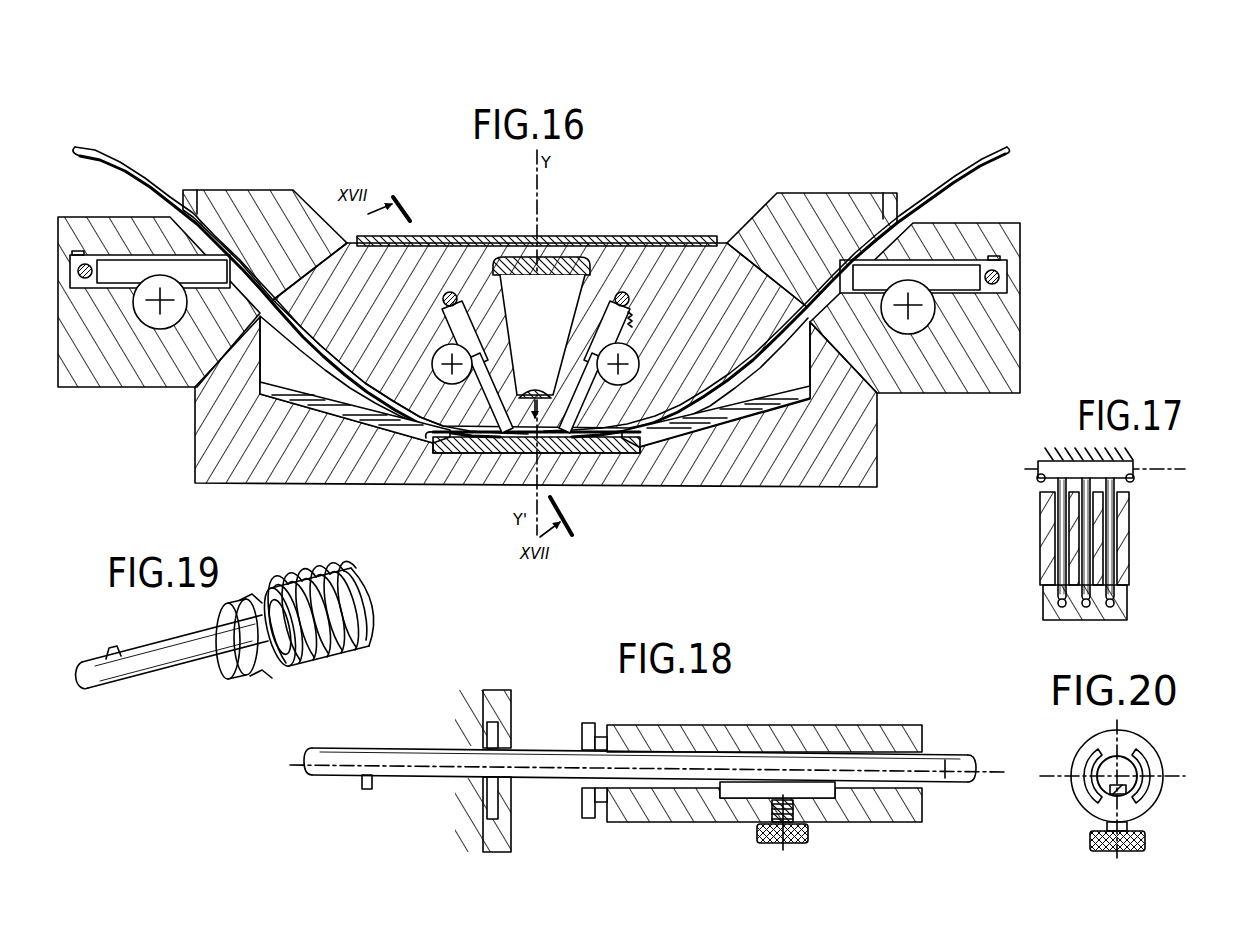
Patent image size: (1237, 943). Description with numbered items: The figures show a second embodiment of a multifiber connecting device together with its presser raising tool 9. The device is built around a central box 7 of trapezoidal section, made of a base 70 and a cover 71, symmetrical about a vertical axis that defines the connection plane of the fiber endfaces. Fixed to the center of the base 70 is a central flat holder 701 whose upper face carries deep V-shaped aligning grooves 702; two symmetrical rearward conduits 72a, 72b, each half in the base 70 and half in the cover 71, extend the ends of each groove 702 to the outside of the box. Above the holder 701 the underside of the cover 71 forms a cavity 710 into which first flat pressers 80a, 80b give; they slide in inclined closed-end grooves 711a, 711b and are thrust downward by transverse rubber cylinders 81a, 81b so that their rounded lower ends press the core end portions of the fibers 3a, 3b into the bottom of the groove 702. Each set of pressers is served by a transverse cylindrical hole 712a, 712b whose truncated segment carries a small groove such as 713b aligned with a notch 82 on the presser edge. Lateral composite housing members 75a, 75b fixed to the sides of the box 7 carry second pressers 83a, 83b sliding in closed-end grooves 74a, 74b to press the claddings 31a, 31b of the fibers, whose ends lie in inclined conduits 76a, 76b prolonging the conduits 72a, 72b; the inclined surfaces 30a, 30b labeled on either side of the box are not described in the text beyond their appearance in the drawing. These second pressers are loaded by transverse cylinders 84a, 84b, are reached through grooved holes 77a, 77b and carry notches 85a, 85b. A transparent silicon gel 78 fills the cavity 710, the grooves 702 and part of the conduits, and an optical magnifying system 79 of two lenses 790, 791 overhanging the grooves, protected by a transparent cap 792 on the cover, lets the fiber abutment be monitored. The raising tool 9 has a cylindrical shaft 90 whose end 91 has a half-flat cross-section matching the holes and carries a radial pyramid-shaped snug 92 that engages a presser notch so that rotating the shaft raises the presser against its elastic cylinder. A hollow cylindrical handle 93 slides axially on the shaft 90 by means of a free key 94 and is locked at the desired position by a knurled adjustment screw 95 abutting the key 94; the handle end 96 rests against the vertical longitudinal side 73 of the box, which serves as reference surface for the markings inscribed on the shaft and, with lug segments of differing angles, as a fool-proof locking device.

In FIG. 16, the optical fiber 3a is at (112, 160).
In FIG. 16, the optical fiber 3b is at (950, 172).
In FIG. 16, the central box 7 is at (262, 506).
In FIG. 18, the presser raising tool 9 is at (724, 718).
In FIG. 16, the inclined support surface 30a is at (314, 362).
In FIG. 16, the inclined support surface 30b is at (754, 364).
In FIG. 16, the cladding 31a is at (246, 232).
In FIG. 16, the cladding 31b is at (830, 232).
In FIG. 16, the base 70 is at (338, 446).
In FIG. 16, the cover 71 is at (388, 306).
In FIG. 16, the rearward conduit 72a is at (396, 428).
In FIG. 16, the rearward conduit 72b is at (742, 410).
In FIG. 18, the vertical longitudinal side 73 is at (510, 827).
In FIG. 16, the longitudinal closed-end groove 74a is at (78, 251).
In FIG. 16, the longitudinal closed-end groove 74b is at (997, 256).
In FIG. 16, the lateral composite housing member 75a is at (104, 390).
In FIG. 16, the lateral composite housing member 75b is at (955, 394).
In FIG. 16, the inclined rearward conduit 76a is at (192, 210).
In FIG. 16, the inclined rearward conduit 76b is at (878, 216).
In FIG. 16, the grooved and truncated cylindrical hole 77a is at (172, 328).
In FIG. 16, the grooved and truncated cylindrical hole 77b is at (926, 333).
In FIG. 16, the silicon gel 78 is at (284, 398).
In FIG. 16, the optical magnifying system 79 is at (554, 298).
In FIG. 16, the first flat presser 80a is at (480, 334).
In FIG. 17, the first flat presser 80a is at (1114, 505).
In FIG. 16, the first flat presser 80b is at (594, 349).
In FIG. 16, the transverse rubber cylinder 81a is at (452, 292).
In FIG. 17, the transverse rubber cylinder 81a is at (1038, 465).
In FIG. 16, the transverse rubber cylinder 81b is at (626, 292).
In FIG. 16, the notch 82 is at (449, 371).
In FIG. 16, the second presser 83a is at (154, 275).
In FIG. 16, the second presser 83b is at (916, 279).
In FIG. 16, the transverse cylinder 84a is at (87, 280).
In FIG. 16, the transverse cylinder 84b is at (993, 287).
In FIG. 16, the notch 85a is at (180, 275).
In FIG. 16, the notch 85b is at (891, 280).
In FIG. 18, the cylindrical shaft 90 is at (946, 780).
In FIG. 20, the shaft end 91 is at (1138, 773).
In FIG. 19, the shaft end 91 is at (148, 682).
In FIG. 18, the shaft end 91 is at (396, 750).
In FIG. 20, the radial pyramid-shaped snug 92 is at (1128, 791).
In FIG. 19, the radial pyramid-shaped snug 92 is at (110, 646).
In FIG. 18, the radial pyramid-shaped snug 92 is at (367, 790).
In FIG. 20, the hollow cylindrical handle 93 is at (1072, 797).
In FIG. 19, the hollow cylindrical handle 93 is at (300, 652).
In FIG. 18, the hollow cylindrical handle 93 is at (827, 728).
In FIG. 18, the free key 94 is at (842, 800).
In FIG. 20, the knurled adjustment screw 95 is at (1146, 843).
In FIG. 18, the knurled adjustment screw 95 is at (757, 836).
In FIG. 20, the handle end 96 is at (1082, 757).
In FIG. 19, the handle end 96 is at (248, 676).
In FIG. 18, the handle end 96 is at (590, 723).
In FIG. 16, the central flat holder 701 is at (494, 457).
In FIG. 17, the central flat holder 701 is at (1124, 607).
In FIG. 17, the V-shaped longitudinal aligning groove 702 is at (1088, 609).
In FIG. 16, the cavity 710 is at (597, 436).
In FIG. 16, the closed-end groove 711a is at (446, 319).
In FIG. 17, the closed-end groove 711a is at (1122, 537).
In FIG. 16, the closed-end groove 711b is at (630, 311).
In FIG. 16, the cylindrical hole 712a is at (440, 360).
In FIG. 16, the cylindrical hole 712b is at (640, 366).
In FIG. 16, the small transverse groove 713b is at (640, 326).
In FIG. 16, the lens 790 is at (566, 257).
In FIG. 16, the lens 791 is at (535, 391).
In FIG. 16, the transparent cap 792 is at (536, 236).